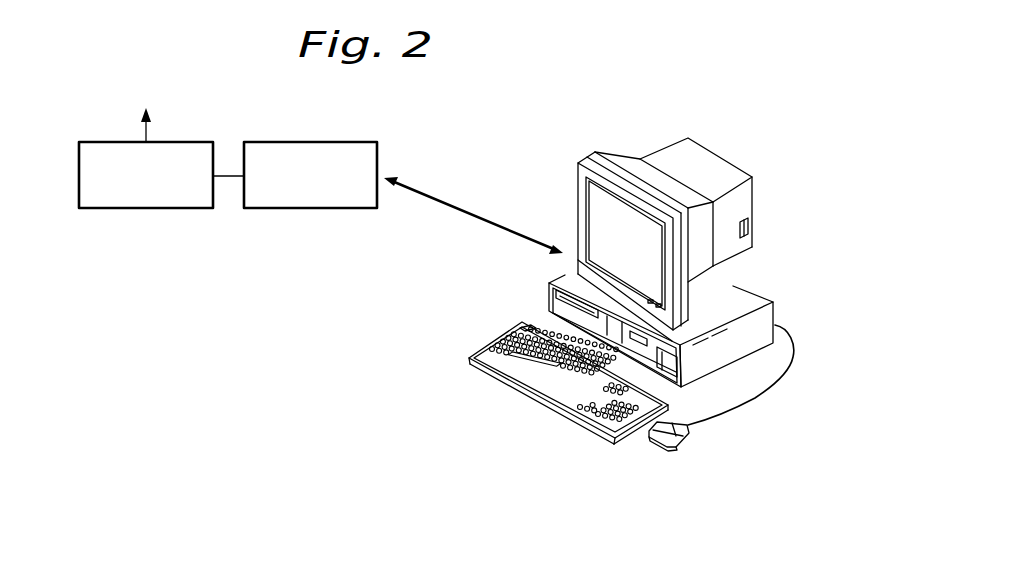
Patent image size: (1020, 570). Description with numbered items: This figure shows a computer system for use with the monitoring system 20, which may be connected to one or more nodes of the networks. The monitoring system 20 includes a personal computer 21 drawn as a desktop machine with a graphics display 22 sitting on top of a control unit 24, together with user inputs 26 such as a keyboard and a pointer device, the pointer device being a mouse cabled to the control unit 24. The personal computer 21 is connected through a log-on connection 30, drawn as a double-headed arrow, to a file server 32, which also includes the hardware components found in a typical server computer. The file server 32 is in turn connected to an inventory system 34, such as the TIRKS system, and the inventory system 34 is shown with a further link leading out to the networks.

The monitoring system 20 is at (240, 394).
The personal computer 21 is at (738, 142).
The graphics display 22 is at (578, 212).
The control unit 24 is at (549, 297).
The user inputs 26 is at (678, 443).
The log-on connection 30 is at (433, 197).
The file server 32 is at (310, 209).
The inventory system 34 is at (146, 209).